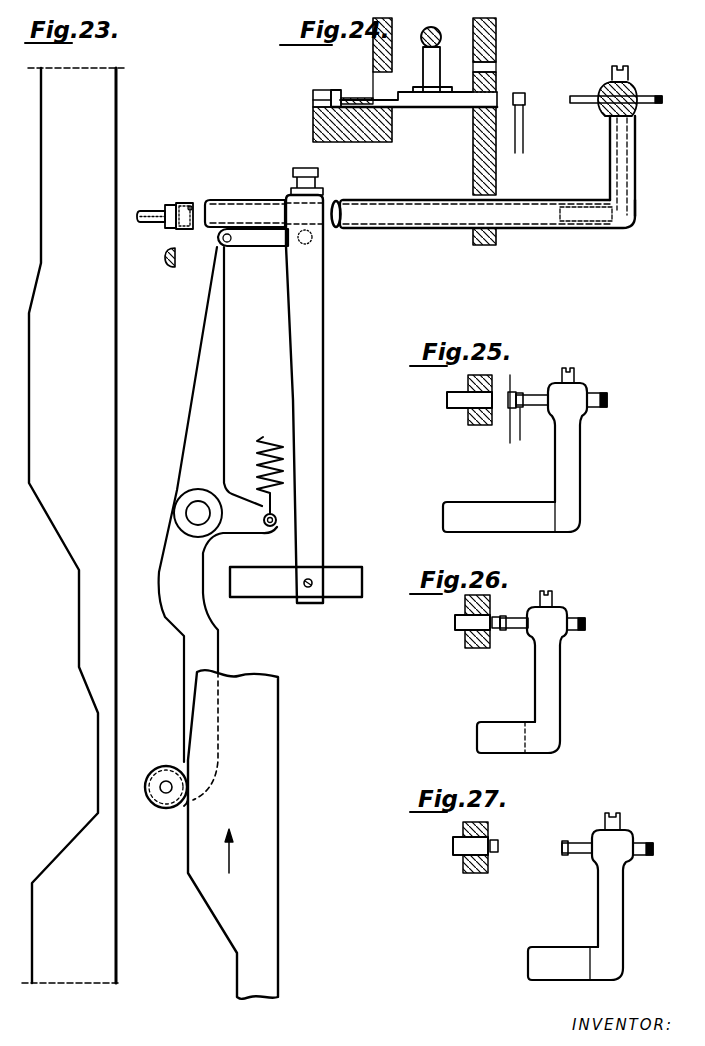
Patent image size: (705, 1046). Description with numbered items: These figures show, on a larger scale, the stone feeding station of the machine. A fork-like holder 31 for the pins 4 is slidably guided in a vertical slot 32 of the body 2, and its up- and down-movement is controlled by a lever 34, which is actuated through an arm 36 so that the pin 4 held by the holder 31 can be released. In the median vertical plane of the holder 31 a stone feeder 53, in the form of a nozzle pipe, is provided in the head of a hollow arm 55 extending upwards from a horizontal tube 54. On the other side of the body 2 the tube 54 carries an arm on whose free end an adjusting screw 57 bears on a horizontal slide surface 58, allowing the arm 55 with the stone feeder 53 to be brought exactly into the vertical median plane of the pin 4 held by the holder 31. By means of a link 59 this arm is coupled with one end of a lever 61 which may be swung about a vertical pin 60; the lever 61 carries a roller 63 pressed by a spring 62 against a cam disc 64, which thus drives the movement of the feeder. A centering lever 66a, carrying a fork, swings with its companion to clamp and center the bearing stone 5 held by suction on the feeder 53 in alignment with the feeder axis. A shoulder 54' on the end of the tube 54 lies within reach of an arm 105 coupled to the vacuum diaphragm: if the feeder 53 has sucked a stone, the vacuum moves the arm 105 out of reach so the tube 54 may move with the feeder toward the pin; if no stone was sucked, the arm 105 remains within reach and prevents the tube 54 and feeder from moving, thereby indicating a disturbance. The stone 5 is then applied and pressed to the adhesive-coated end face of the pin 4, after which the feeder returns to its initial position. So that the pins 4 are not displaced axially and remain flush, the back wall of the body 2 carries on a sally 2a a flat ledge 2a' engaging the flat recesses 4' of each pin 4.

In FIG. 23, the cam disc 64 is at (187, 860).
In FIG. 23, the lever 61 is at (183, 492).
In FIG. 23, the roller 63 is at (161, 808).
In FIG. 23, the vertical pin 60 is at (190, 513).
In FIG. 23, the spring 62 is at (263, 436).
In FIG. 23, the link 59 is at (262, 240).
In FIG. 23, the arm 36 is at (324, 334).
In FIG. 23, the horizontal slide surface 58 is at (357, 573).
In FIG. 23, the adjusting screw 57 is at (310, 601).
In FIG. 23, the shoulder 54' is at (165, 197).
In FIG. 23, the arm 105 is at (170, 246).
In FIG. 24, the holder 31 is at (405, 43).
In FIG. 24, the vertical slot 32 is at (497, 63).
In FIG. 24, the lever 34 is at (441, 45).
In FIG. 24, the pin 4 is at (414, 116).
In FIG. 25, the pin 4 is at (460, 406).
In FIG. 26, the pin 4 is at (459, 624).
In FIG. 27, the pin 4 is at (460, 854).
In FIG. 24, the flat recess 4' is at (352, 86).
In FIG. 24, the sally 2a is at (299, 95).
In FIG. 24, the flat ledge 2a' is at (329, 127).
In FIG. 24, the body 2 is at (476, 172).
In FIG. 24, the horizontal tube 54 is at (484, 233).
In FIG. 25, the horizontal tube 54 is at (511, 505).
In FIG. 26, the horizontal tube 54 is at (518, 724).
In FIG. 27, the horizontal tube 54 is at (575, 949).
In FIG. 24, the hollow arm 55 is at (612, 160).
In FIG. 25, the hollow arm 55 is at (579, 472).
In FIG. 26, the hollow arm 55 is at (537, 672).
In FIG. 27, the hollow arm 55 is at (603, 885).
In FIG. 24, the stone feeder 53 is at (598, 96).
In FIG. 25, the stone feeder 53 is at (536, 393).
In FIG. 26, the stone feeder 53 is at (520, 616).
In FIG. 27, the stone feeder 53 is at (582, 842).
In FIG. 24, the bearing stone 5 is at (572, 98).
In FIG. 25, the bearing stone 5 is at (511, 391).
In FIG. 26, the bearing stone 5 is at (496, 615).
In FIG. 27, the bearing stone 5 is at (499, 842).
In FIG. 24, the centering lever 66a is at (524, 143).
In FIG. 25, the centering lever 66a is at (521, 432).